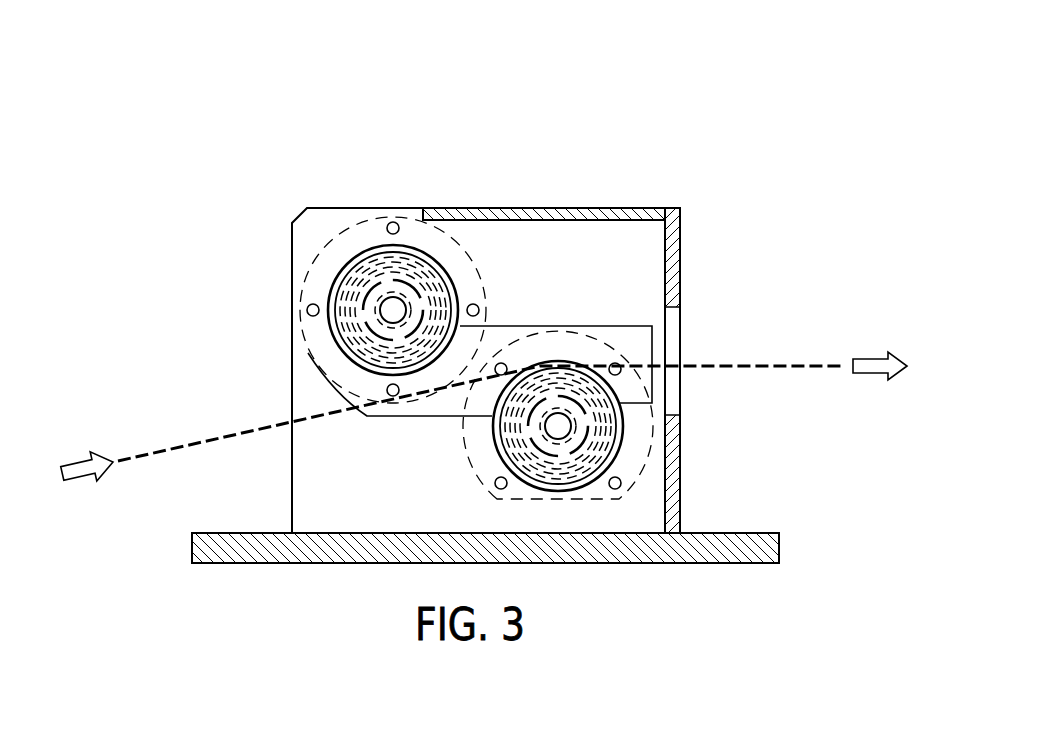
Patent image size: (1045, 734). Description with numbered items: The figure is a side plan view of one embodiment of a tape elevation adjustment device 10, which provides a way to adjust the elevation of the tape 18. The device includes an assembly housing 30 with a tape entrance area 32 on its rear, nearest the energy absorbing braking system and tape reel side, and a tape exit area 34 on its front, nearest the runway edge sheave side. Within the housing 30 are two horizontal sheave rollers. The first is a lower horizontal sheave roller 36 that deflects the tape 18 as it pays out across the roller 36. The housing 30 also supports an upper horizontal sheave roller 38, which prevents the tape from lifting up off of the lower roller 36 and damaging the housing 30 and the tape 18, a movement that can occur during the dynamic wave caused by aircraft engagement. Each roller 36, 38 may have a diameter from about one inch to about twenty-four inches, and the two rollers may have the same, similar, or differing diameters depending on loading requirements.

The tape elevation adjustment device 10 is at (550, 97).
The tape 18 is at (765, 365).
The assembly housing 30 is at (617, 207).
The tape entrance area 32 is at (226, 386).
The tape exit area 34 is at (726, 401).
The lower horizontal sheave roller 36 is at (597, 452).
The upper horizontal sheave roller 38 is at (388, 273).